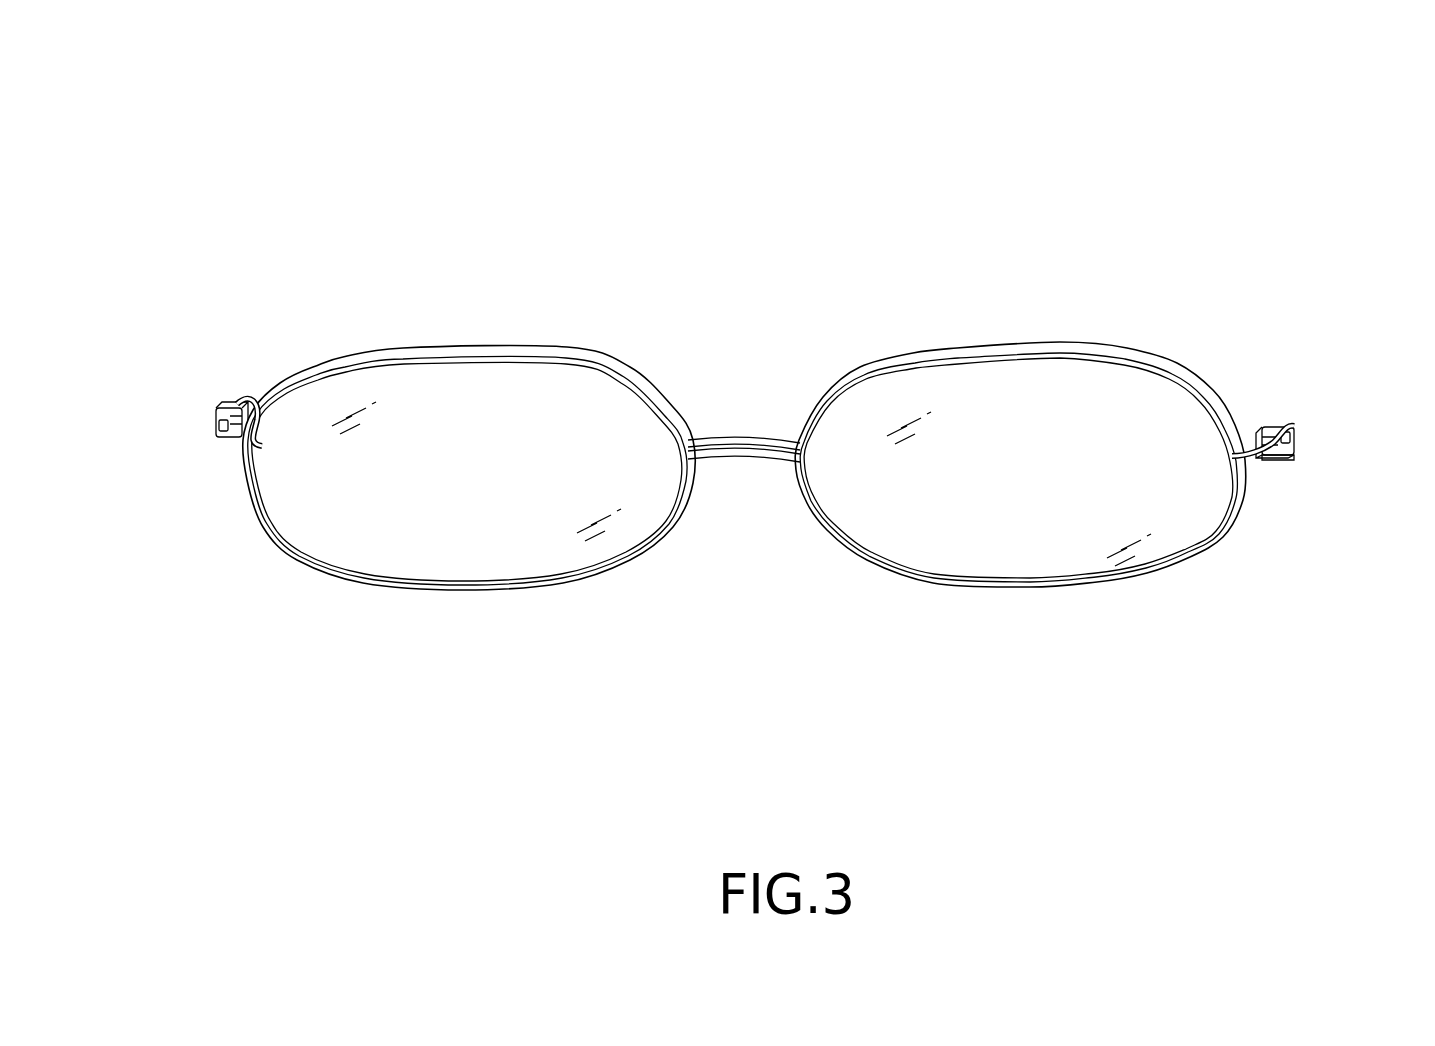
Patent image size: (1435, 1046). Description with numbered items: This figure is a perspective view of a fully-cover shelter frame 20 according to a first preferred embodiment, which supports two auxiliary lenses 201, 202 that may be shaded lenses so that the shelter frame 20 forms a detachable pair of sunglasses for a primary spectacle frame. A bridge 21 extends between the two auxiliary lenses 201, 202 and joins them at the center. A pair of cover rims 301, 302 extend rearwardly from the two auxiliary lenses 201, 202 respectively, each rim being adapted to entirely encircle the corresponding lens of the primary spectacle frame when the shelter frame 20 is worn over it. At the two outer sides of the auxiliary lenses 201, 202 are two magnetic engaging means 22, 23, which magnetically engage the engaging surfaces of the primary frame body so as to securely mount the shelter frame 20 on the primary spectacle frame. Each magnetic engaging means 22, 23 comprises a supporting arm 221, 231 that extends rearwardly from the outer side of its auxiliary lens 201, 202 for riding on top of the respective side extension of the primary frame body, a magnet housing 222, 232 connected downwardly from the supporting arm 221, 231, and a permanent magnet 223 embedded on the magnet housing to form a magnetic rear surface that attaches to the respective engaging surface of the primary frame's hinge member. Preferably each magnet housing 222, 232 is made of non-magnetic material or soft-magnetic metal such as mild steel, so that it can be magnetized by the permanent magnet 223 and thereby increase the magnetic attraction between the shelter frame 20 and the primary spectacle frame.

The shelter frame 20 is at (825, 225).
The bridge 21 is at (713, 372).
The magnetic engaging means 22 is at (1333, 455).
The supporting arm 221 is at (1280, 423).
The magnet housing 222 is at (1297, 432).
The permanent magnet 223 is at (1287, 457).
The magnetic engaging means 23 is at (182, 411).
The supporting arm 231 is at (247, 443).
The magnet housing 232 is at (217, 413).
The auxiliary lens 201 is at (997, 527).
The auxiliary lens 202 is at (467, 505).
The cover rim 301 is at (1025, 355).
The cover rim 302 is at (407, 353).